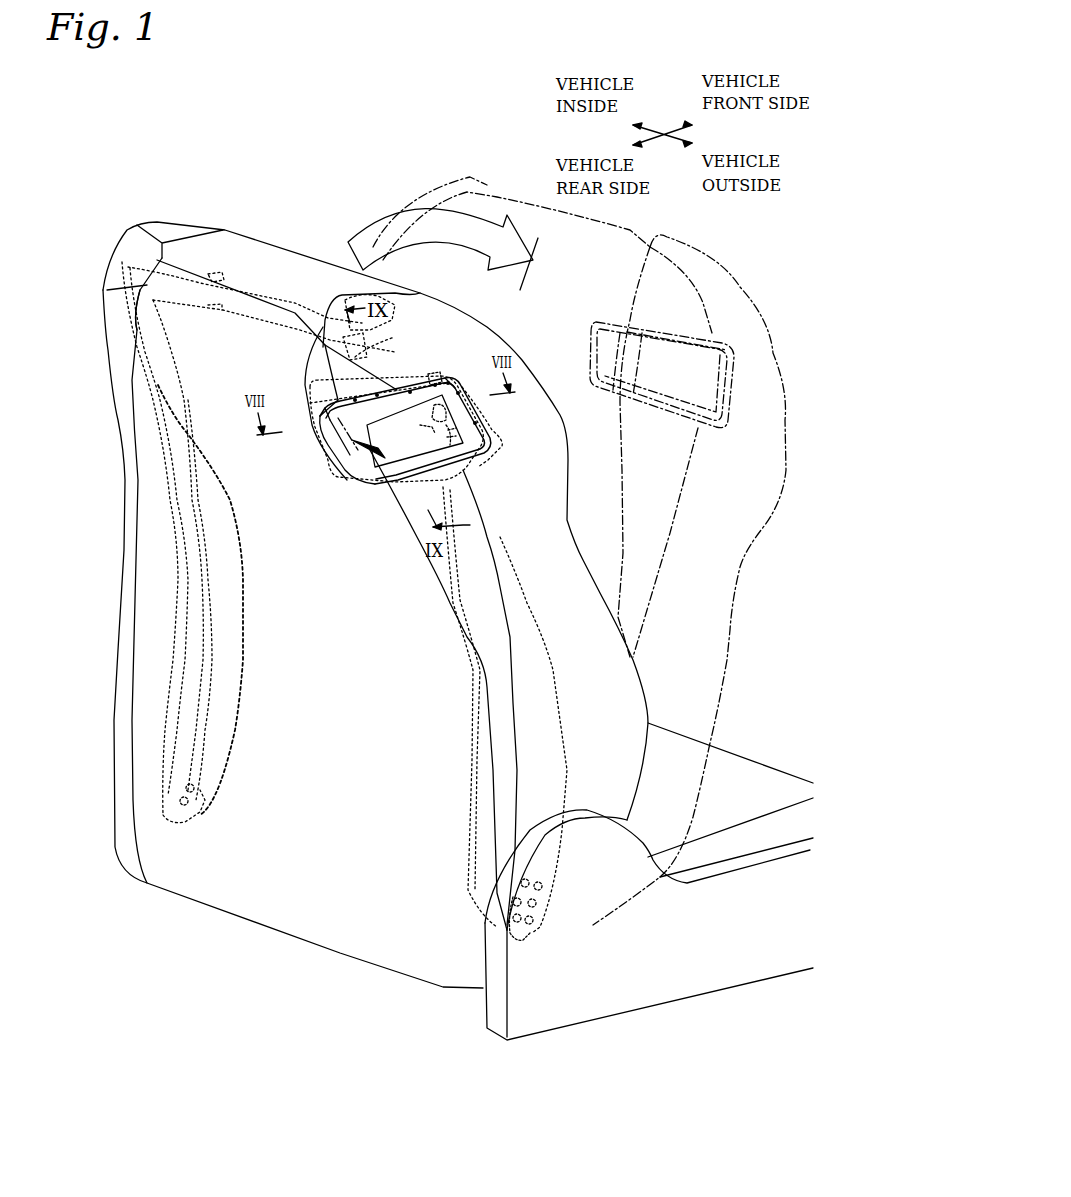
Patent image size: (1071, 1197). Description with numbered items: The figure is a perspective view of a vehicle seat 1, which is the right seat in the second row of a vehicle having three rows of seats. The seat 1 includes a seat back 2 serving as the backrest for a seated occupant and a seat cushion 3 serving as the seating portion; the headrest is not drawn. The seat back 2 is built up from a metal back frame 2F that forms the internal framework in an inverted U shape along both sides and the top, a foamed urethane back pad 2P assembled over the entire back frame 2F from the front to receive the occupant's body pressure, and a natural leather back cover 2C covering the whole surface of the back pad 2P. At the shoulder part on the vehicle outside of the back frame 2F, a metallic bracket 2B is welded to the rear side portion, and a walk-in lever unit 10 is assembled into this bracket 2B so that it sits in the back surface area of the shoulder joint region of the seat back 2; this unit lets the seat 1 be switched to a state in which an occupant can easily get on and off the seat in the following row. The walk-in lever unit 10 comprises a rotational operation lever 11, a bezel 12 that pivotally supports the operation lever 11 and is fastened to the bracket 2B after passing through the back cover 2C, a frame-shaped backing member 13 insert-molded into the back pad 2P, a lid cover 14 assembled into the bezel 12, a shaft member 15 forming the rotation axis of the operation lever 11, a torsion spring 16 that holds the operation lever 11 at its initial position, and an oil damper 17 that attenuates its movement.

The seat 1 is at (344, 165).
The seat back 2 is at (262, 262).
The back pad 2P is at (118, 313).
The back cover 2C is at (122, 352).
The back frame 2F is at (190, 444).
The bracket 2B is at (392, 377).
The seat cushion 3 is at (740, 773).
The walk-in lever unit 10 is at (450, 380).
The operation lever 11 is at (403, 452).
The bezel 12 is at (478, 456).
The backing member 13 is at (492, 442).
The lid cover 14 is at (355, 425).
The shaft member 15 is at (437, 380).
The torsion spring 16 is at (468, 428).
The oil damper 17 is at (452, 387).